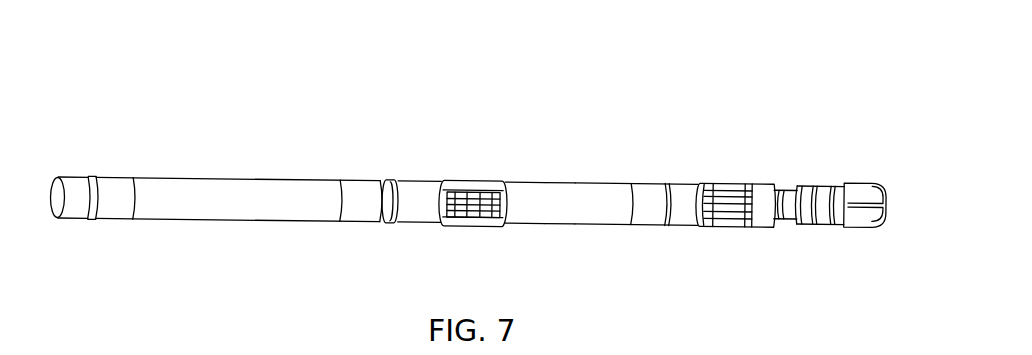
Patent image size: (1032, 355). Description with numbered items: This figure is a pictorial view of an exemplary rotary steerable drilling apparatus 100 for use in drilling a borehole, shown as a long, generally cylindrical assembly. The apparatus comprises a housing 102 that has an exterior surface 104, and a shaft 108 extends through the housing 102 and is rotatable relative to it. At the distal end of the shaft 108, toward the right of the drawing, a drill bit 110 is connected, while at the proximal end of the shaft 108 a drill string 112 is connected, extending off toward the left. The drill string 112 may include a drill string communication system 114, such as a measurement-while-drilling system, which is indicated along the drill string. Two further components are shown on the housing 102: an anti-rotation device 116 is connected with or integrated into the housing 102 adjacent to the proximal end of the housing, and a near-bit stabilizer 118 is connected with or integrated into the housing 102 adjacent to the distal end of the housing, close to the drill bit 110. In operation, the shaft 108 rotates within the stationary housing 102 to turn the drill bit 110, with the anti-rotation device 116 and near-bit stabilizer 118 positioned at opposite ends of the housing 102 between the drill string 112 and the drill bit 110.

The rotary steerable drilling apparatus 100 is at (560, 258).
The housing 102 is at (594, 182).
The exterior surface 104 is at (533, 181).
The shaft 108 is at (792, 261).
The drill bit 110 is at (866, 258).
The drill string 112 is at (86, 247).
The drill string communication system 114 is at (263, 256).
The anti-rotation device 116 is at (470, 178).
The near-bit stabilizer 118 is at (716, 184).